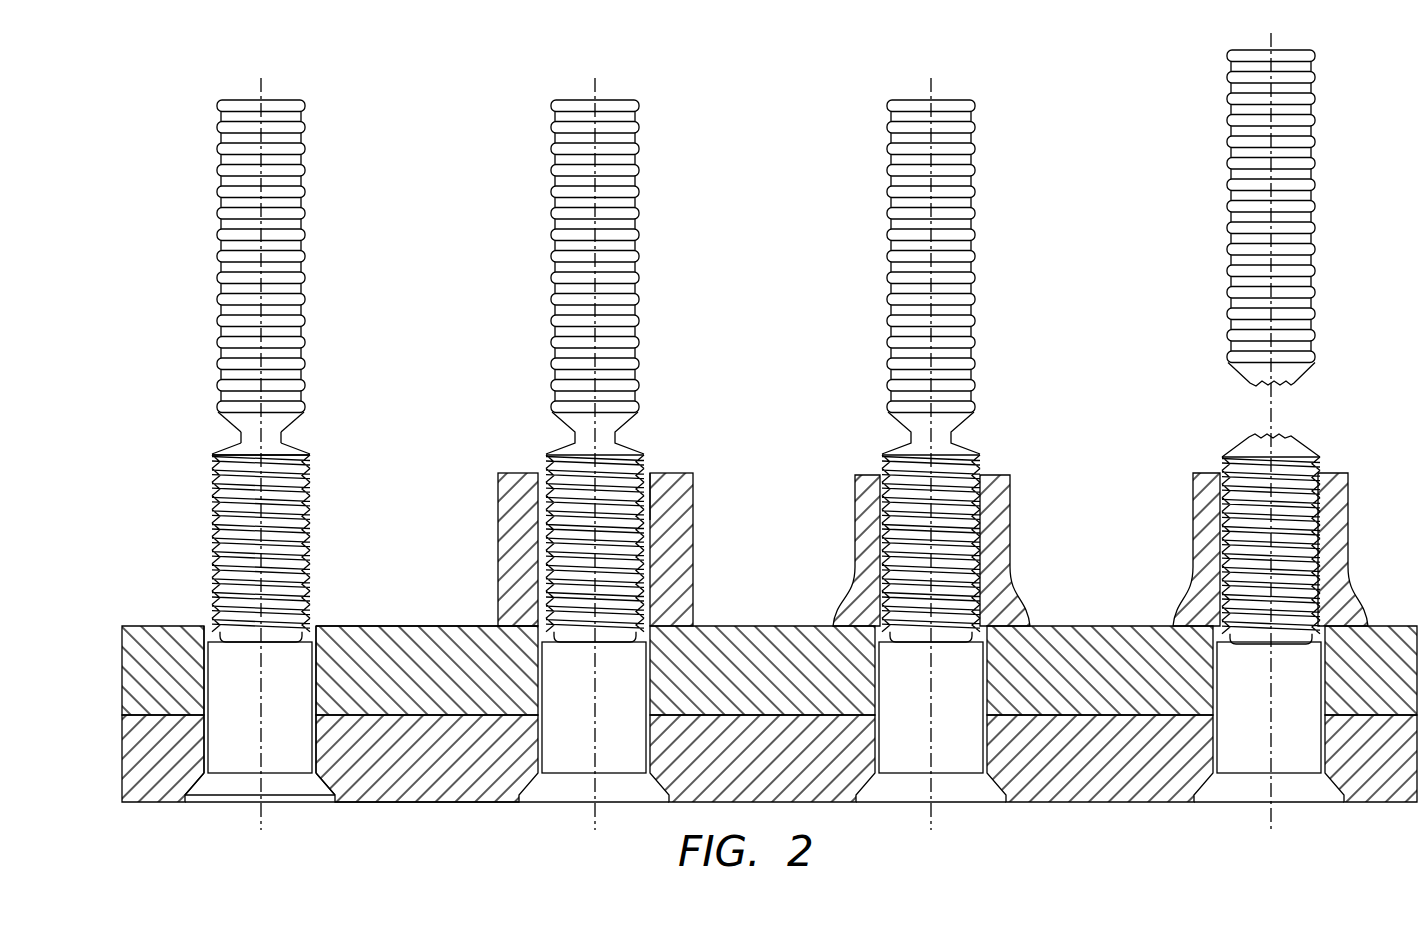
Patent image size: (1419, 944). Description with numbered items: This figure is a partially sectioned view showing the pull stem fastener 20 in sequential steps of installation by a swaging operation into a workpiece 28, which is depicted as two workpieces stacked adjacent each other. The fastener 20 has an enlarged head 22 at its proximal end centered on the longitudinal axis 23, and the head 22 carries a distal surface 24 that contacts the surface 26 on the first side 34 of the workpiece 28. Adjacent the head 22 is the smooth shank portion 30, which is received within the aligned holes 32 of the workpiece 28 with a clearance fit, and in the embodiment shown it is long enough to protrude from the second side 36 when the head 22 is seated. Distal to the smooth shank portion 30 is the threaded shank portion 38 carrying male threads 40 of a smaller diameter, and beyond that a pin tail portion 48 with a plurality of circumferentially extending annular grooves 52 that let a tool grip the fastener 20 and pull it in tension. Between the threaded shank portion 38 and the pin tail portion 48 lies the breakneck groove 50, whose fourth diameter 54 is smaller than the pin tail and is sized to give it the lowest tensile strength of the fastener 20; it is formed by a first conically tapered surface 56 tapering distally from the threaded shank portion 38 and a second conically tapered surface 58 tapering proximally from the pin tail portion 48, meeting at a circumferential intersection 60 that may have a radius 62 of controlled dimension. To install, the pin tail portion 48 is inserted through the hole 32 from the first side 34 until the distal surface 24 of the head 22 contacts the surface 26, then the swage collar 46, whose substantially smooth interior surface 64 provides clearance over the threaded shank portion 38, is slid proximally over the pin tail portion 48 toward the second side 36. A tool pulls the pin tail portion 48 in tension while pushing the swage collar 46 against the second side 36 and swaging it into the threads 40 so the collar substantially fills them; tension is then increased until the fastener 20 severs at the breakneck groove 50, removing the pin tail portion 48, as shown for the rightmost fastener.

The pull stem fastener 20 is at (248, 340).
The head 22 is at (248, 785).
The longitudinal axis 23 is at (261, 97).
The distal surface 24 is at (190, 782).
The surface 26 is at (322, 785).
The workpiece 28 is at (118, 772).
The smooth shank portion 30 is at (313, 738).
The hole 32 is at (317, 655).
The first side 34 is at (470, 812).
The second side 36 is at (425, 583).
The threaded shank portion 38 is at (211, 597).
The threads 40 is at (219, 548).
The swage collar 46 is at (515, 473).
The pin tail portion 48 is at (284, 225).
The breakneck groove 50 is at (222, 421).
The annular grooves 52 is at (305, 130).
The fourth diameter 54 is at (231, 436).
The first conically tapered surface 56 is at (296, 446).
The second conically tapered surface 58 is at (292, 436).
The circumferential intersection 60 is at (233, 448).
The radius 62 is at (292, 422).
The interior surface 64 is at (650, 517).